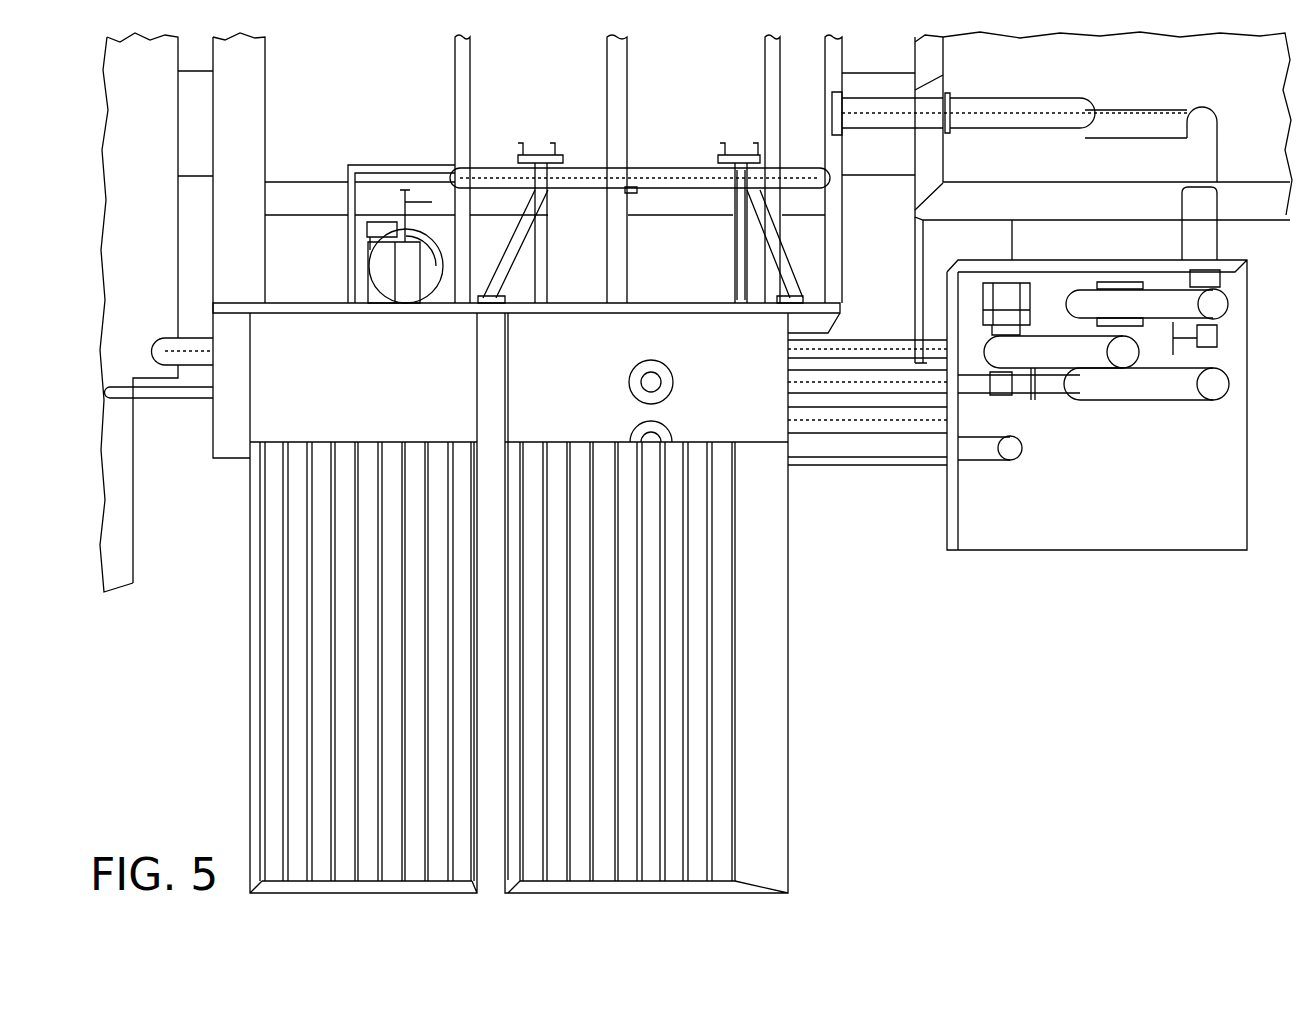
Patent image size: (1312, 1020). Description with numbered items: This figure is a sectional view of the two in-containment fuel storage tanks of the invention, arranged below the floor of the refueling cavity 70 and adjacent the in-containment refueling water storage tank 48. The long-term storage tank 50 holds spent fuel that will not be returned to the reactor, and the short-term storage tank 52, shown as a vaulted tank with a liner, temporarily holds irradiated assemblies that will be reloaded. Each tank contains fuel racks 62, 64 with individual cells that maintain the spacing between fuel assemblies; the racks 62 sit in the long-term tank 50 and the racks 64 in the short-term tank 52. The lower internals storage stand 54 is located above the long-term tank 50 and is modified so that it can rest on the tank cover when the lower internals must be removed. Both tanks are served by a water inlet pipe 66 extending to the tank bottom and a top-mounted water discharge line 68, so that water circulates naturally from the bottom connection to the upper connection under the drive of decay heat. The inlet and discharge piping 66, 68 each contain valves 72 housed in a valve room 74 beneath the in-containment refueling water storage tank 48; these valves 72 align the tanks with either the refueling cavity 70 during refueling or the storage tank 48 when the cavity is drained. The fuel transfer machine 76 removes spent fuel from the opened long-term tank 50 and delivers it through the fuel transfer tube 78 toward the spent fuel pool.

The in-containment refueling water storage tank 48 is at (1141, 79).
The long-term storage tank 50 is at (788, 725).
The short-term storage tank 52 is at (250, 727).
The lower internals storage stand 54 is at (735, 267).
The fuel racks of the long-term storage tank 62 is at (723, 610).
The fuel racks of the short-term storage tank 64 is at (275, 605).
The water inlet pipe 66 is at (810, 453).
The water discharge line 68 is at (888, 388).
The refueling cavity 70 is at (551, 96).
The valves 72 is at (1220, 333).
The valve room 74 is at (1133, 532).
The fuel transfer machine 76 is at (367, 247).
The fuel transfer tube 78 is at (425, 270).